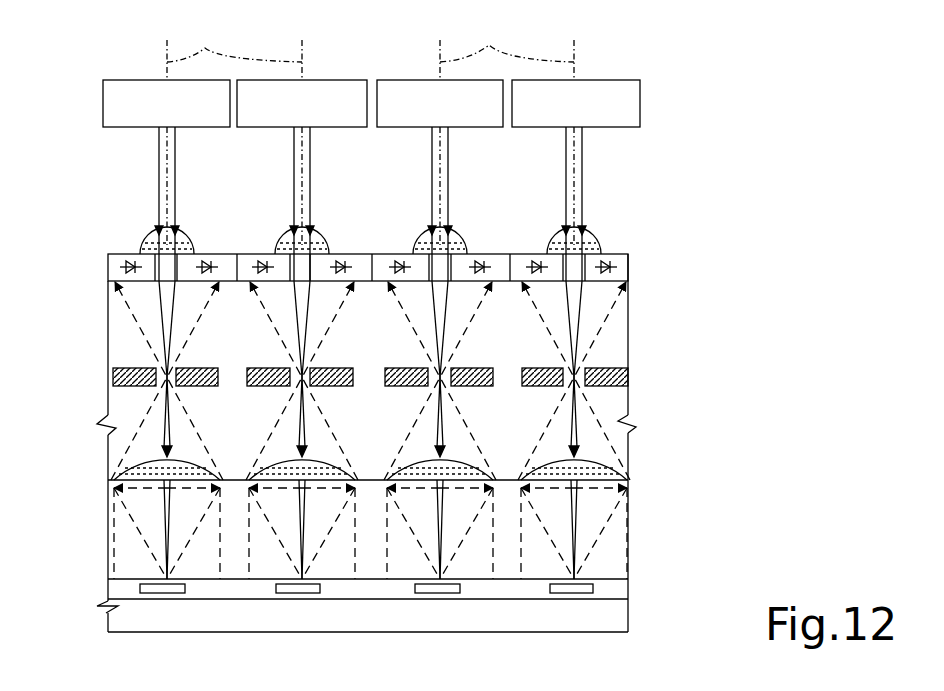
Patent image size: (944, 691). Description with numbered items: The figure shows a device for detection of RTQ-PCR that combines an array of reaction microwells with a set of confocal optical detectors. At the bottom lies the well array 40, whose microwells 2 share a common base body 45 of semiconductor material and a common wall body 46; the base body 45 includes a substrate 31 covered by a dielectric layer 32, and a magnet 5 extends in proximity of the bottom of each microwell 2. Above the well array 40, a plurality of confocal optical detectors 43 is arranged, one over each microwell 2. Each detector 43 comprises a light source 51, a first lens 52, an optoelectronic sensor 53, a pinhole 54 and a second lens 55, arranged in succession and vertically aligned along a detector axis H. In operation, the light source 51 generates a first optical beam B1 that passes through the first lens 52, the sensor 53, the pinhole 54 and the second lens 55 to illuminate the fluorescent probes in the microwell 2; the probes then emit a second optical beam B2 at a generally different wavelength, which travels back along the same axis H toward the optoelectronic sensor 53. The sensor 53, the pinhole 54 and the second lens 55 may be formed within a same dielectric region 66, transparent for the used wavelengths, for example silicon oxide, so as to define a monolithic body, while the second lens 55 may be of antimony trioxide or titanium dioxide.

The confocal optical detector 43 is at (398, 89).
The light source 51 is at (142, 122).
The first optical beam B1 is at (568, 165).
The first lens 52 is at (150, 240).
The optoelectronic sensor 53 is at (628, 262).
The dielectric region 66 is at (126, 322).
The pinhole 54 is at (113, 376).
The second lens 55 is at (114, 478).
The second optical beam B2 is at (600, 527).
The common wall body 46 is at (110, 530).
The well array 40 is at (634, 568).
The microwell 2 is at (112, 568).
The dielectric layer 32 is at (112, 592).
The substrate 31 is at (598, 628).
The common base body 45 is at (636, 579).
The magnet 5 is at (286, 591).
The detector axis H is at (370, 52).